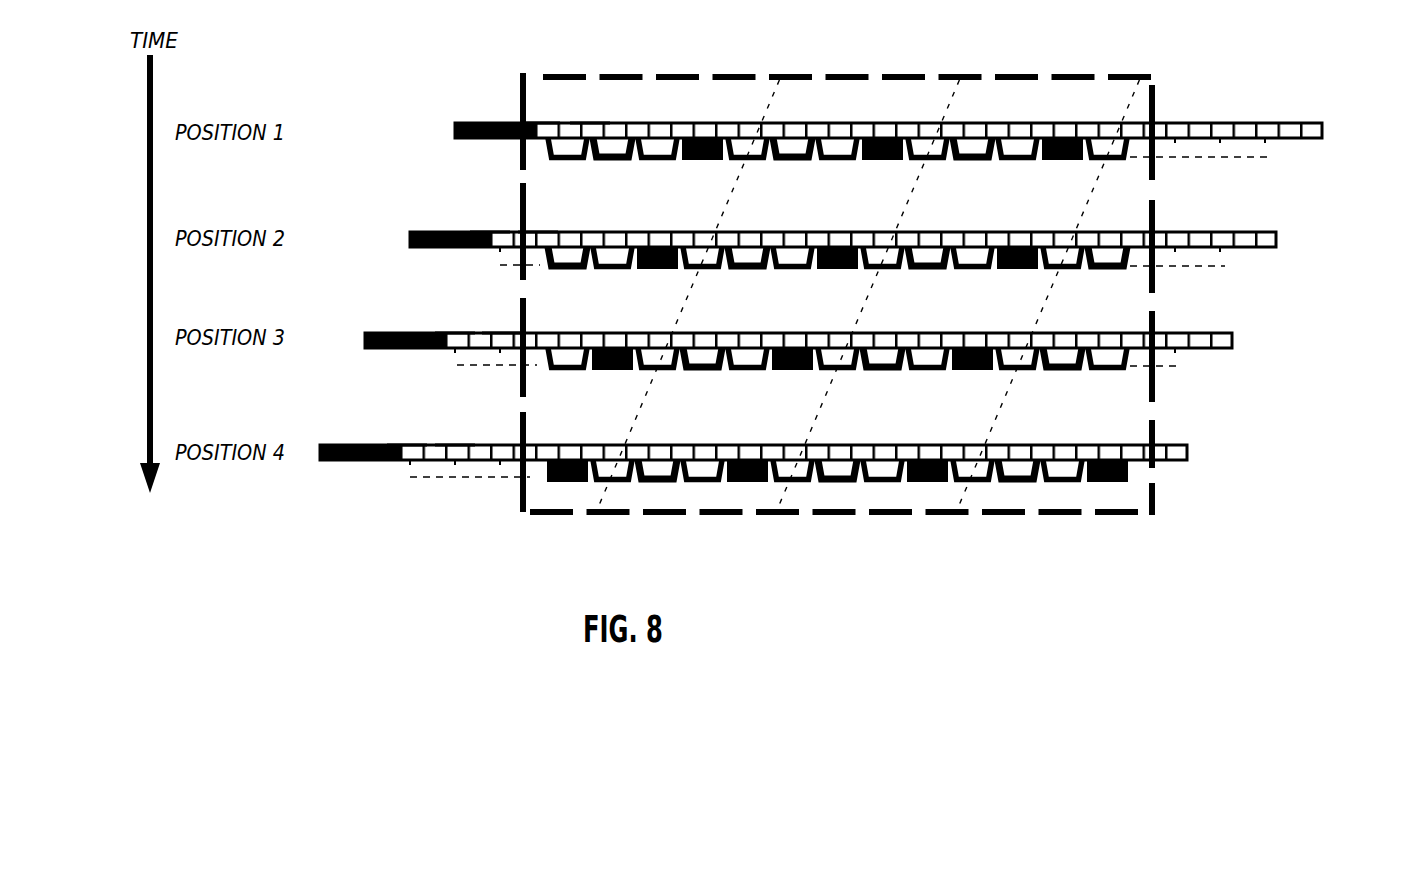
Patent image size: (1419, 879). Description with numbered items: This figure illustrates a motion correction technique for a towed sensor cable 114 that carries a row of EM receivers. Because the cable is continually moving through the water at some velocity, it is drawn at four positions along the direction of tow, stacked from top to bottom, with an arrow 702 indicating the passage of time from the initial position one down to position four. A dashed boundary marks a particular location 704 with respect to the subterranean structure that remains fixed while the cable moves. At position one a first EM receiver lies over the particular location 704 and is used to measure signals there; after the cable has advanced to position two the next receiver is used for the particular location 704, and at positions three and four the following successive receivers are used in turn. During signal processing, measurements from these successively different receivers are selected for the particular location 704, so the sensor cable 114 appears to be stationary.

The sensor cable 114 is at (1348, 113).
The arrow 702 is at (147, 420).
The particular location 704 is at (599, 519).